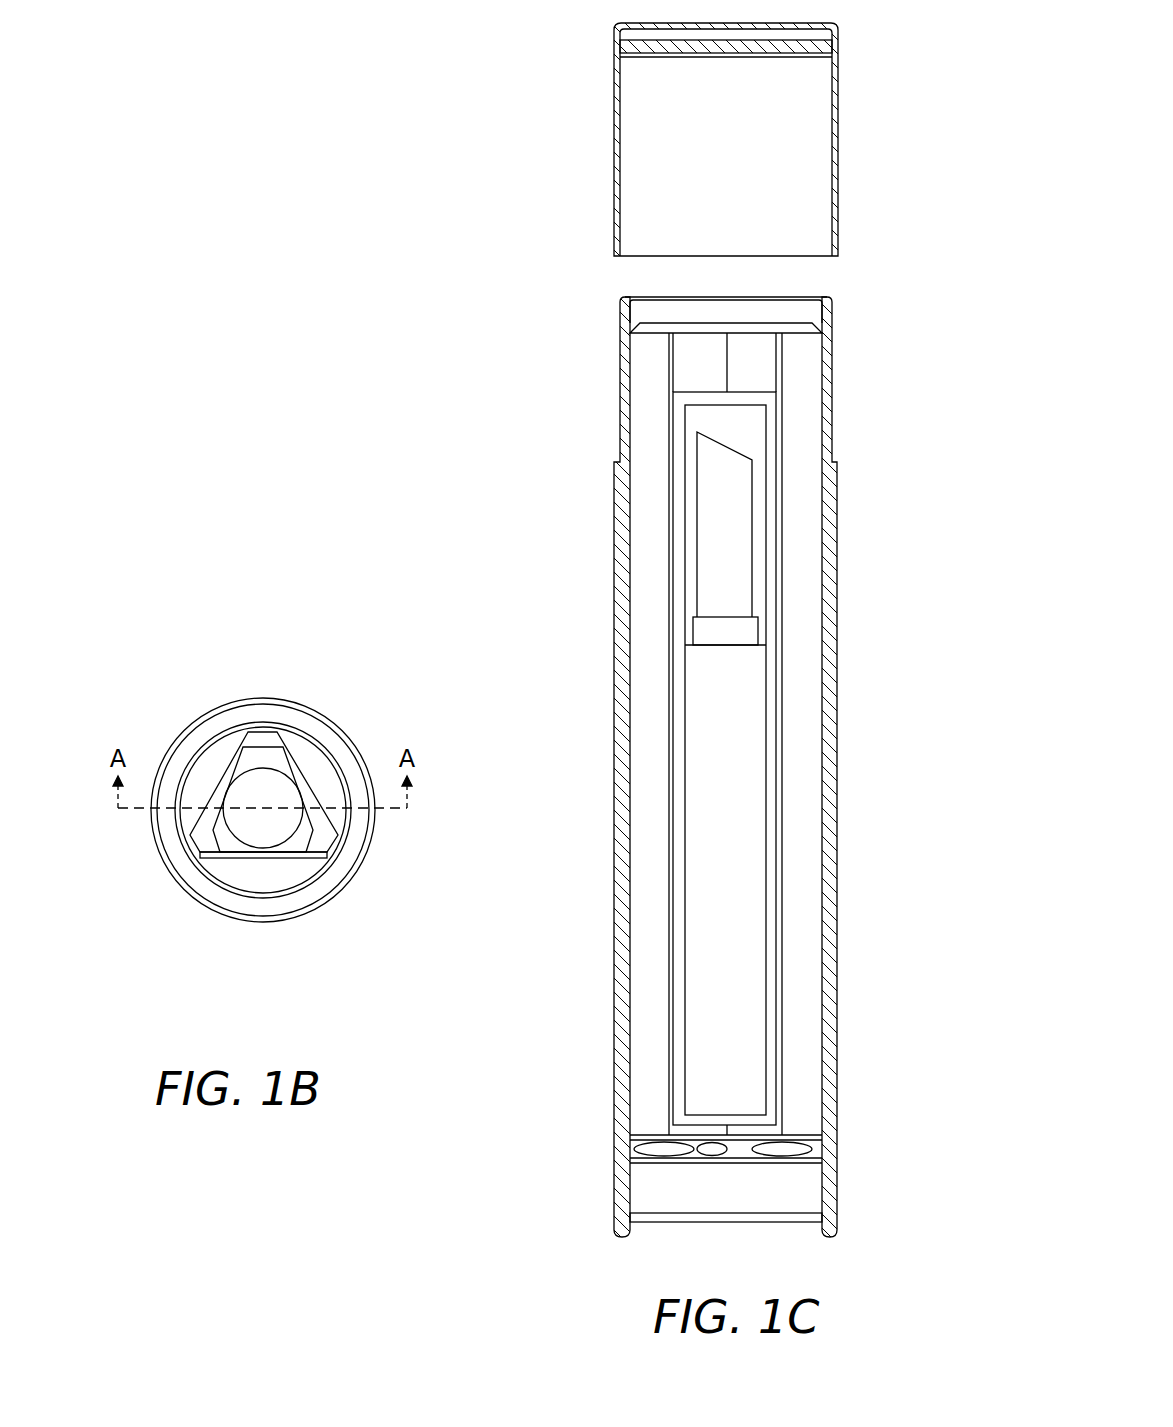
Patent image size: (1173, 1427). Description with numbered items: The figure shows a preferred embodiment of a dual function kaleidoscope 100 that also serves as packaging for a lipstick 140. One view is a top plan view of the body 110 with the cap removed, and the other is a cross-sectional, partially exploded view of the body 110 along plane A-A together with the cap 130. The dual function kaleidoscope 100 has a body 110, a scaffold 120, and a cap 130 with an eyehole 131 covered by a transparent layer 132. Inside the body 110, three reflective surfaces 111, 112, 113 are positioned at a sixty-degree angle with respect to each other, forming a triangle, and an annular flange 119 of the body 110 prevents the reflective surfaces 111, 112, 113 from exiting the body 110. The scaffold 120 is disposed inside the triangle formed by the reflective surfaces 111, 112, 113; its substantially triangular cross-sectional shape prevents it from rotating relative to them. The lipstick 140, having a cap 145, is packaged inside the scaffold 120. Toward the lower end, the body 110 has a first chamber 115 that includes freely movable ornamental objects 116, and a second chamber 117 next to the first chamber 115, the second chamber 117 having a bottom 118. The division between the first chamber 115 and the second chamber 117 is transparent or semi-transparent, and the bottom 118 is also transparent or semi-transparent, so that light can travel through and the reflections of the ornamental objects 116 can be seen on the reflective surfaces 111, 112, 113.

In FIG. 1C, the dual function kaleidoscope 100 is at (418, 140).
In FIG. 1C, the body 110 is at (838, 900).
In FIG. 1B, the body 110 is at (337, 895).
In FIG. 1C, the reflective surface 111 is at (782, 383).
In FIG. 1B, the reflective surface 111 is at (282, 740).
In FIG. 1C, the reflective surface 112 is at (670, 362).
In FIG. 1B, the reflective surface 112 is at (230, 733).
In FIG. 1B, the reflective surface 113 is at (207, 857).
In FIG. 1C, the first chamber 115 is at (812, 1152).
In FIG. 1C, the ornamental objects 116 is at (638, 1150).
In FIG. 1C, the second chamber 117 is at (805, 1195).
In FIG. 1C, the bottom 118 is at (768, 1220).
In FIG. 1C, the annular flange 119 is at (823, 330).
In FIG. 1B, the annular flange 119 is at (260, 737).
In FIG. 1C, the scaffold 120 is at (778, 500).
In FIG. 1B, the scaffold 120 is at (260, 855).
In FIG. 1C, the cap 130 is at (838, 145).
In FIG. 1C, the eyehole 131 is at (728, 48).
In FIG. 1C, the transparent layer 132 is at (675, 57).
In FIG. 1C, the lipstick 140 is at (767, 715).
In FIG. 1C, the cap 145 is at (683, 462).